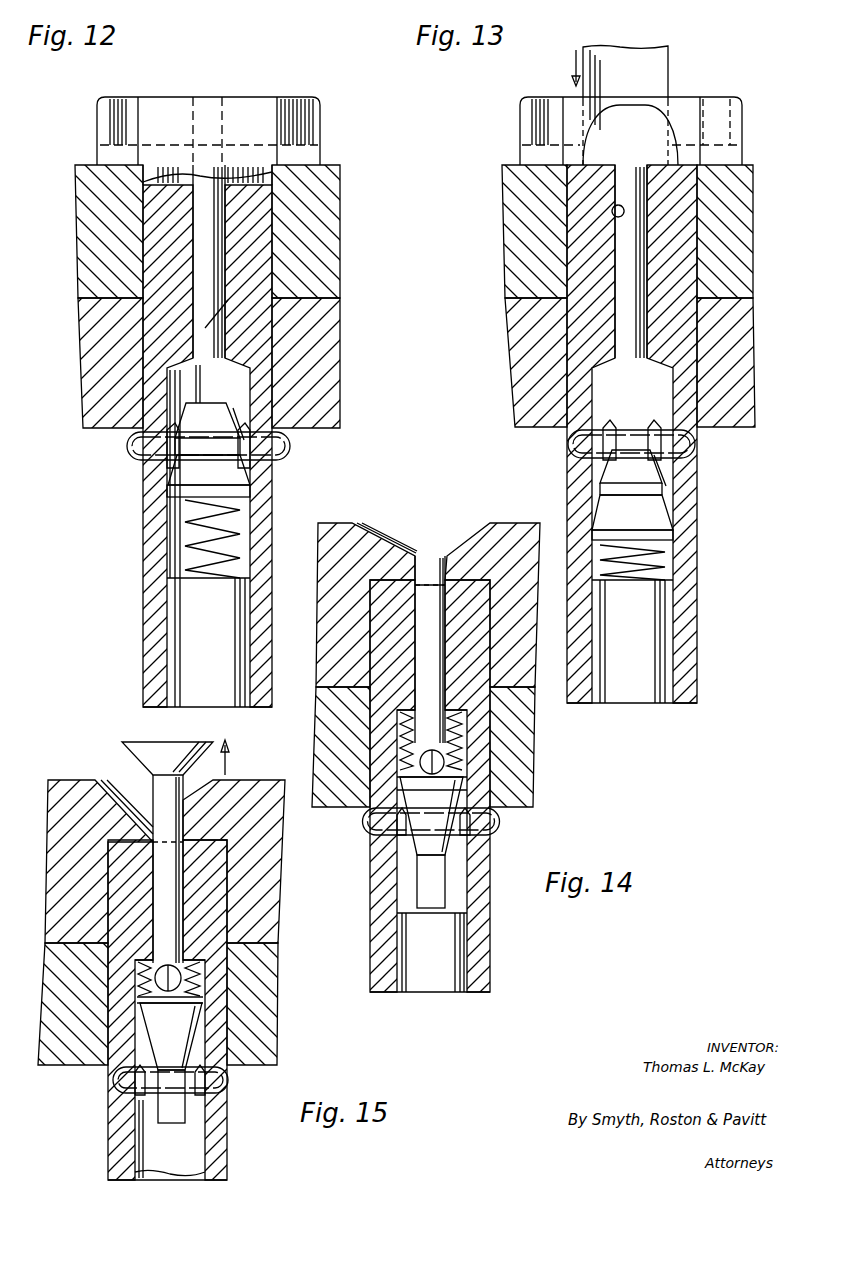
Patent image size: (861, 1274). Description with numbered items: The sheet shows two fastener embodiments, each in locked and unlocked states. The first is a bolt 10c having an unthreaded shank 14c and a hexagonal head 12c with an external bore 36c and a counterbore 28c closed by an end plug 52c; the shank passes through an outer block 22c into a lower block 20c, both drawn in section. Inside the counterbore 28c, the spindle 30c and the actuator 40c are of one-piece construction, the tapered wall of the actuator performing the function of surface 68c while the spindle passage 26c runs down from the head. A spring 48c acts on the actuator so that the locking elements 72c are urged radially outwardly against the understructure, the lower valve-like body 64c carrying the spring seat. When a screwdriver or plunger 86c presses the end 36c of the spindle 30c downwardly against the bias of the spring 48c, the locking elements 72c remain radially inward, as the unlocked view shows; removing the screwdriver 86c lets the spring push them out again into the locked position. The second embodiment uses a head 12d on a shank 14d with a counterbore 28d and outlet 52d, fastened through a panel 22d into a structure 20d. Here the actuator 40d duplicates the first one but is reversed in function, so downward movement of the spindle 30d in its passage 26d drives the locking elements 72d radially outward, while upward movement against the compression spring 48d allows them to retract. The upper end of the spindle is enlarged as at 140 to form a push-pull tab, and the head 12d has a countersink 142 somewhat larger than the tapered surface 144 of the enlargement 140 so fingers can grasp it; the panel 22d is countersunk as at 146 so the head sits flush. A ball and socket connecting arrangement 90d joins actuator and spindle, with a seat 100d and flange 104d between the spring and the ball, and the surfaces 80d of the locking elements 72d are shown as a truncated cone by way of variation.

In FIG. 12, the bolt 10c is at (330, 148).
In FIG. 13, the bolt 10c is at (746, 134).
In FIG. 12, the head 12c is at (306, 120).
In FIG. 13, the head 12c is at (730, 115).
In FIG. 12, the unthreaded shank 14c is at (255, 218).
In FIG. 13, the unthreaded shank 14c is at (680, 232).
In FIG. 12, the lower block 20c is at (330, 340).
In FIG. 13, the lower block 20c is at (742, 380).
In FIG. 12, the upper block 22c is at (328, 245).
In FIG. 13, the upper block 22c is at (740, 262).
In FIG. 12, the bore wall 26c is at (230, 300).
In FIG. 13, the bore wall 26c is at (615, 220).
In FIG. 12, the counterbore 28c is at (247, 402).
In FIG. 12, the spindle 30c is at (200, 285).
In FIG. 13, the spindle 30c is at (620, 292).
In FIG. 12, the external bore 36c is at (228, 95).
In FIG. 13, the external bore 36c is at (632, 112).
In FIG. 12, the actuator 40c is at (205, 422).
In FIG. 13, the actuator 40c is at (622, 470).
In FIG. 12, the spring 48c is at (235, 535).
In FIG. 13, the spring 48c is at (668, 558).
In FIG. 12, the end plug 52c is at (192, 638).
In FIG. 13, the end plug 52c is at (640, 628).
In FIG. 12, the valve head 64c is at (232, 452).
In FIG. 13, the valve head 64c is at (624, 500).
In FIG. 12, the surface 68c is at (233, 398).
In FIG. 12, the locking elements 72c is at (134, 457).
In FIG. 13, the locking elements 72c is at (580, 437).
In FIG. 13, the screwdriver or plunger 86c is at (645, 55).
In FIG. 14, the head 12d is at (528, 525).
In FIG. 15, the head 12d is at (240, 790).
In FIG. 14, the sleeve body 14d is at (478, 645).
In FIG. 15, the sleeve body 14d is at (167, 1010).
In FIG. 14, the lower block 20d is at (330, 715).
In FIG. 15, the lower block 20d is at (260, 1040).
In FIG. 14, the panel 22d is at (330, 597).
In FIG. 15, the panel 22d is at (252, 888).
In FIG. 14, the bore wall 26d is at (428, 644).
In FIG. 15, the bore wall 26d is at (162, 908).
In FIG. 14, the valve chamber 28d is at (400, 745).
In FIG. 15, the valve chamber 28d is at (140, 970).
In FIG. 14, the spindle 30d is at (425, 614).
In FIG. 15, the spindle 30d is at (172, 820).
In FIG. 14, the actuator 40d is at (440, 798).
In FIG. 15, the actuator 40d is at (165, 1025).
In FIG. 14, the compression spring 48d is at (463, 732).
In FIG. 15, the compression spring 48d is at (200, 972).
In FIG. 14, the outlet passage 52d is at (428, 980).
In FIG. 15, the outlet passage 52d is at (140, 1162).
In FIG. 14, the locking elements 72d is at (500, 822).
In FIG. 15, the locking elements 72d is at (122, 1080).
In FIG. 14, the surfaces 80d is at (460, 840).
In FIG. 15, the surfaces 80d is at (175, 1110).
In FIG. 14, the ball and socket connecting arrangement 90d is at (444, 763).
In FIG. 15, the ball and socket connecting arrangement 90d is at (182, 985).
In FIG. 15, the spring seat washer 100d is at (137, 993).
In FIG. 15, the plug flange 104d is at (138, 1010).
In FIG. 14, the enlargement 140 is at (428, 540).
In FIG. 15, the enlargement 140 is at (160, 752).
In FIG. 14, the countersink 142 is at (368, 530).
In FIG. 15, the countersink 142 is at (130, 800).
In FIG. 15, the tapered surface 144 is at (218, 757).
In FIG. 15, the countersink 146 is at (245, 815).